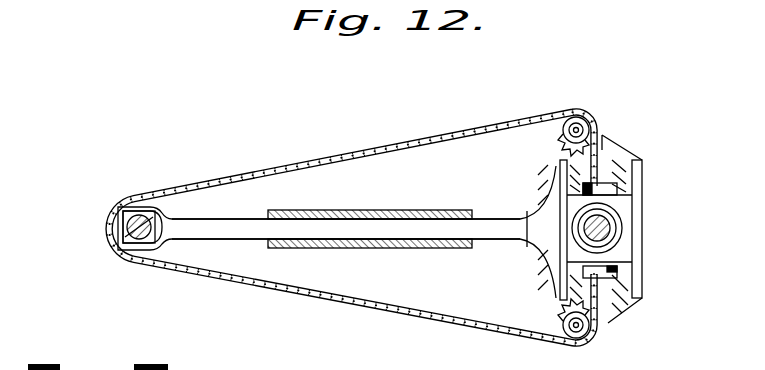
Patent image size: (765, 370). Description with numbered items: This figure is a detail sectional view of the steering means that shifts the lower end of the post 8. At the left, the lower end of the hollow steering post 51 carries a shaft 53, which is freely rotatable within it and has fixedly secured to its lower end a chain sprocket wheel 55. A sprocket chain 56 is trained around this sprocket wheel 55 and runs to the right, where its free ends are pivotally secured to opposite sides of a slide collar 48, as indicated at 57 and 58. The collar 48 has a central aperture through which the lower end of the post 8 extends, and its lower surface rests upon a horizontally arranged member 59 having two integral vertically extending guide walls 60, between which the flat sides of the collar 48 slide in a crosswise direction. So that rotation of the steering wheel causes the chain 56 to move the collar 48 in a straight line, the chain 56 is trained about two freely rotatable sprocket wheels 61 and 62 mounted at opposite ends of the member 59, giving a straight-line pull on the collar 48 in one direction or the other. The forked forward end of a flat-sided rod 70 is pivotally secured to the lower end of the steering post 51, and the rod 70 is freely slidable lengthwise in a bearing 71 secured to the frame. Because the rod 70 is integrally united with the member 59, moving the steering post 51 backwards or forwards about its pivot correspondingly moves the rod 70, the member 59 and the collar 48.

The post 8 is at (590, 235).
The slide collar 48 is at (622, 249).
The steering post 51 is at (114, 240).
The shaft 53 is at (112, 233).
The chain sprocket wheel 55 is at (110, 222).
The sprocket chain 56 is at (400, 313).
The chain end connection 57 is at (605, 192).
The chain end connection 58 is at (600, 268).
The horizontally arranged member 59 is at (614, 315).
The guide walls 60 is at (562, 184).
The sprocket wheel 61 is at (563, 322).
The sprocket wheel 62 is at (560, 140).
The flat-sided rod 70 is at (237, 217).
The bearing 71 is at (379, 210).